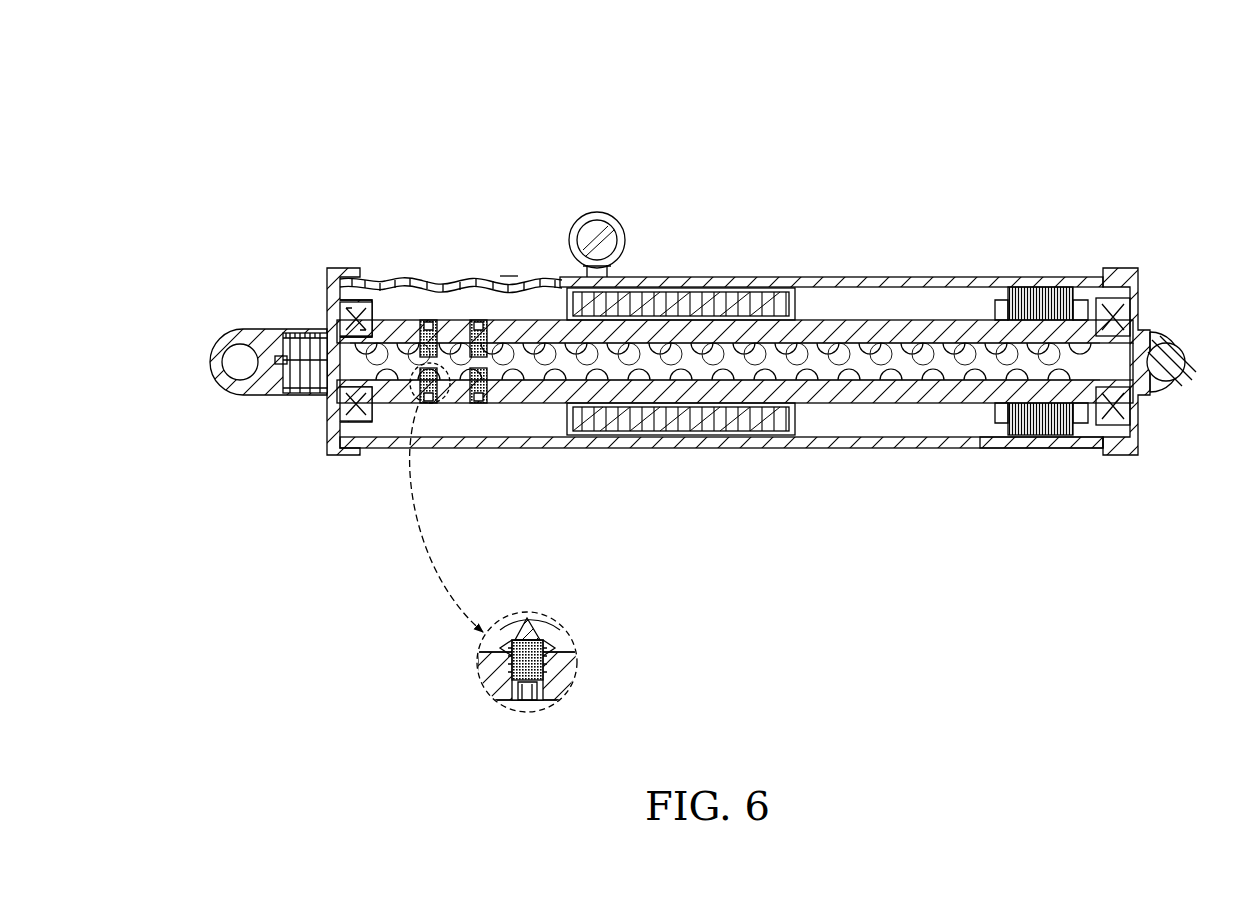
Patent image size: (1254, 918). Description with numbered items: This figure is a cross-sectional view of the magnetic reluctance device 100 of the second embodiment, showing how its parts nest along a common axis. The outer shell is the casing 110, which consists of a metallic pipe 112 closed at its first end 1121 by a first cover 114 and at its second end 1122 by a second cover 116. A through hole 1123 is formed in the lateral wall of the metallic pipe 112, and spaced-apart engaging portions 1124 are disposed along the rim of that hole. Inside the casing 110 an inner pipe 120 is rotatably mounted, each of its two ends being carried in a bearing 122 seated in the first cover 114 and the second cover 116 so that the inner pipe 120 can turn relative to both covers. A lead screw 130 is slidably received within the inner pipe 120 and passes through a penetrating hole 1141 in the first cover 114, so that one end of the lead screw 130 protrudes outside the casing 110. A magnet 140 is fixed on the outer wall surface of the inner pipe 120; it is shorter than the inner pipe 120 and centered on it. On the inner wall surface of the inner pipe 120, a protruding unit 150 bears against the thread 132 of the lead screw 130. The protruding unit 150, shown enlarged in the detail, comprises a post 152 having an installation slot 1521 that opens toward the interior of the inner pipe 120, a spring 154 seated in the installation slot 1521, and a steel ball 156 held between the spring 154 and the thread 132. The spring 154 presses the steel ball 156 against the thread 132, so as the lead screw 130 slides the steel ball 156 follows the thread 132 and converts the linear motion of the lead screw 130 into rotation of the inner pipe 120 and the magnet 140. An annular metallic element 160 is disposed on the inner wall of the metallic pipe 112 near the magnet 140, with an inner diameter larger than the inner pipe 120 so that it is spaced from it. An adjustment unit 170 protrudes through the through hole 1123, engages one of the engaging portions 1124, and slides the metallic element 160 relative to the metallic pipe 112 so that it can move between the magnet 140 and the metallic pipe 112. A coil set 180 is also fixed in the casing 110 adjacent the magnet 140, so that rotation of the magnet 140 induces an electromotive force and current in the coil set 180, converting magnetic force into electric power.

The magnetic reluctance device 100 is at (190, 78).
The casing 110 is at (897, 248).
The metallic pipe 112 is at (802, 278).
The first end 1121 is at (373, 450).
The second end 1122 is at (1098, 450).
The through hole 1123 is at (508, 270).
The engaging portions 1124 is at (432, 278).
The first cover 114 is at (325, 432).
The penetrating hole 1141 is at (322, 398).
The second cover 116 is at (1140, 420).
The inner pipe 120 is at (845, 392).
The bearing 122 is at (330, 318).
The lead screw 130 is at (208, 372).
The thread 132 is at (522, 368).
The magnet 140 is at (688, 300).
The protruding unit 150 is at (458, 432).
The post 152 is at (510, 672).
The installation slot 1521 is at (492, 640).
The spring 154 is at (558, 672).
The steel ball 156 is at (522, 626).
The metallic element 160 is at (652, 289).
The adjustment unit 170 is at (598, 224).
The coil set 180 is at (1032, 298).